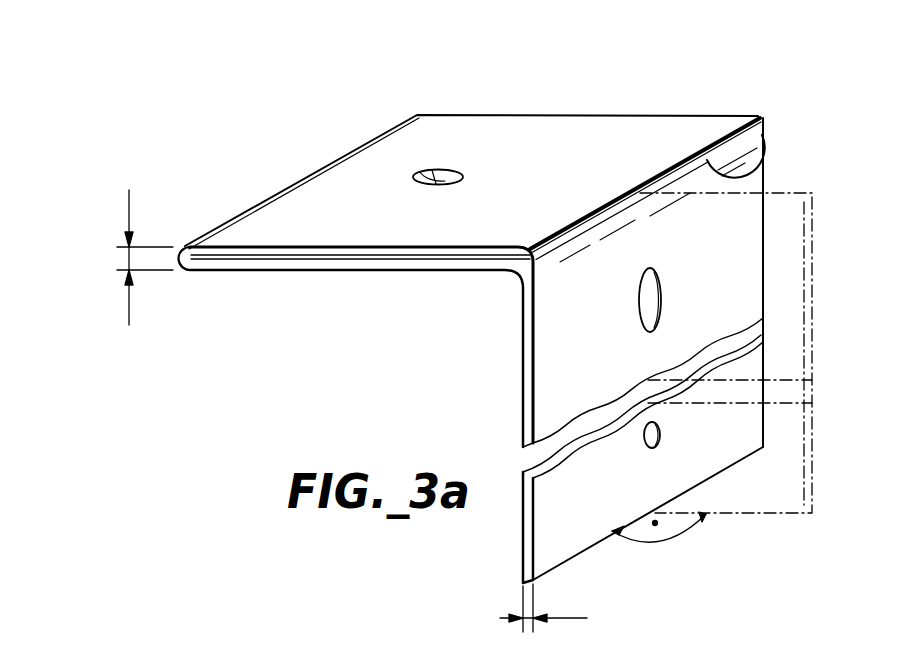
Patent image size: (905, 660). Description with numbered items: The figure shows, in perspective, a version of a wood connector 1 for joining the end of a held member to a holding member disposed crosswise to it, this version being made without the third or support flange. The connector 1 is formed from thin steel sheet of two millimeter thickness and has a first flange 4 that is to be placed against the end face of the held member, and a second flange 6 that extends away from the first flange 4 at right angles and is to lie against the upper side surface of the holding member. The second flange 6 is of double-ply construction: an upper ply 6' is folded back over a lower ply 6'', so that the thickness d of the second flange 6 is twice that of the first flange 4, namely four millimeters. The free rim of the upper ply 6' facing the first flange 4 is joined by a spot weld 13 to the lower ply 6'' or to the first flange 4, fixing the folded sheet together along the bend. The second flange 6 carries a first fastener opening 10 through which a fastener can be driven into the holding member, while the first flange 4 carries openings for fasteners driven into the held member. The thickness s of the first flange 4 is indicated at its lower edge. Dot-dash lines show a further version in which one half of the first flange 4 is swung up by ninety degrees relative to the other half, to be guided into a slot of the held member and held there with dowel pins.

The connector 1 is at (600, 84).
The first flange 4 is at (522, 362).
The second flange 6 is at (469, 227).
The upper ply of second flange 6' is at (360, 310).
The lower ply of second flange 6'' is at (356, 358).
The first fastener opening 10 is at (437, 177).
The spot weld 13 is at (580, 234).
The thickness of second flange d is at (117, 258).
The plate thickness dimension s is at (479, 617).